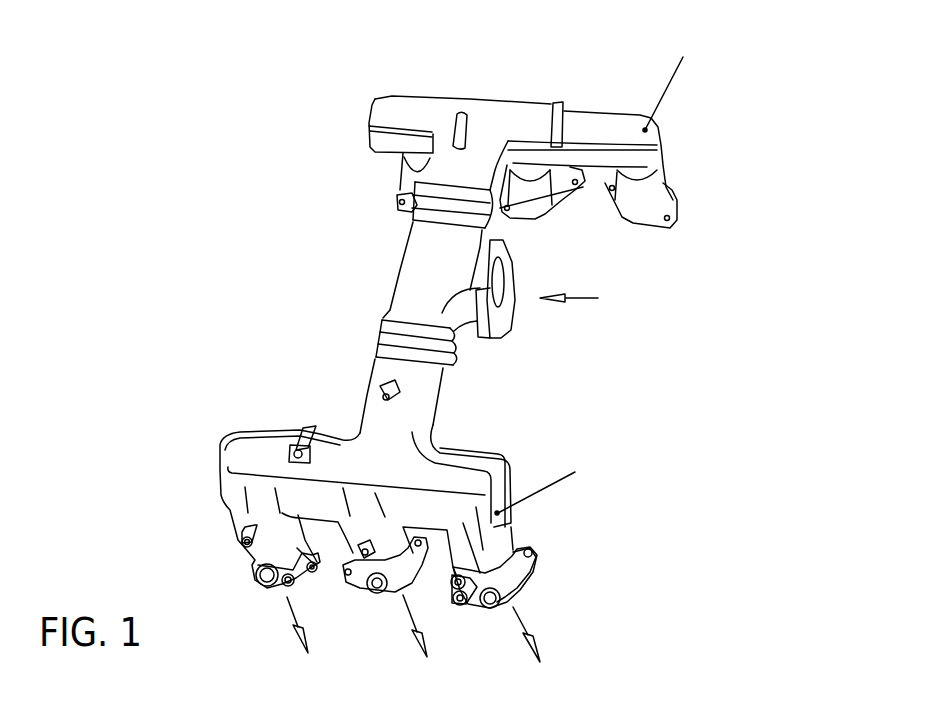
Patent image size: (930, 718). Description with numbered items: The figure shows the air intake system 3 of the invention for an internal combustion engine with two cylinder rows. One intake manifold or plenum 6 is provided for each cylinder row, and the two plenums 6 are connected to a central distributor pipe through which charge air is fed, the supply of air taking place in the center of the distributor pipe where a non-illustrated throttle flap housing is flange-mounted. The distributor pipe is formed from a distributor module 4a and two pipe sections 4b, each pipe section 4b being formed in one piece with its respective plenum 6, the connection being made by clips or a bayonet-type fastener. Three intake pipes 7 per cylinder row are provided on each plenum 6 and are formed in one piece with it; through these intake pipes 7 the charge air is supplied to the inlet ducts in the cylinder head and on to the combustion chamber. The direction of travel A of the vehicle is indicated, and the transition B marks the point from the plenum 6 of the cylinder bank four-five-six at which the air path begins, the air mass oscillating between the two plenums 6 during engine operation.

The air intake system 3 is at (265, 333).
The distributor module 4a is at (423, 262).
The pipe sections 4b is at (448, 167).
The plenum 6 is at (400, 107).
The intake pipes 7 is at (537, 190).
The direction of travel A is at (255, 248).
The transition B is at (494, 131).